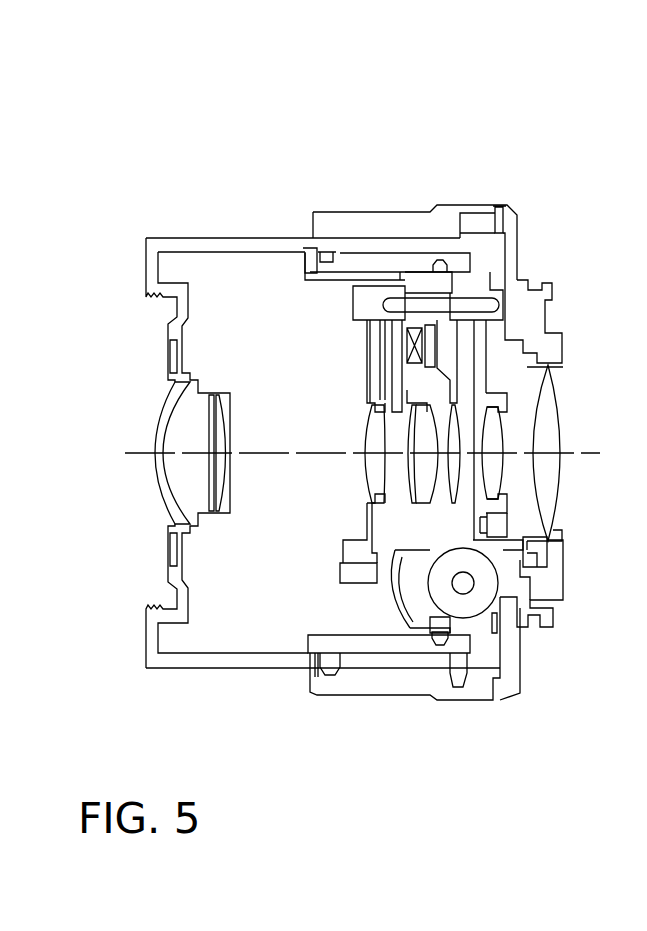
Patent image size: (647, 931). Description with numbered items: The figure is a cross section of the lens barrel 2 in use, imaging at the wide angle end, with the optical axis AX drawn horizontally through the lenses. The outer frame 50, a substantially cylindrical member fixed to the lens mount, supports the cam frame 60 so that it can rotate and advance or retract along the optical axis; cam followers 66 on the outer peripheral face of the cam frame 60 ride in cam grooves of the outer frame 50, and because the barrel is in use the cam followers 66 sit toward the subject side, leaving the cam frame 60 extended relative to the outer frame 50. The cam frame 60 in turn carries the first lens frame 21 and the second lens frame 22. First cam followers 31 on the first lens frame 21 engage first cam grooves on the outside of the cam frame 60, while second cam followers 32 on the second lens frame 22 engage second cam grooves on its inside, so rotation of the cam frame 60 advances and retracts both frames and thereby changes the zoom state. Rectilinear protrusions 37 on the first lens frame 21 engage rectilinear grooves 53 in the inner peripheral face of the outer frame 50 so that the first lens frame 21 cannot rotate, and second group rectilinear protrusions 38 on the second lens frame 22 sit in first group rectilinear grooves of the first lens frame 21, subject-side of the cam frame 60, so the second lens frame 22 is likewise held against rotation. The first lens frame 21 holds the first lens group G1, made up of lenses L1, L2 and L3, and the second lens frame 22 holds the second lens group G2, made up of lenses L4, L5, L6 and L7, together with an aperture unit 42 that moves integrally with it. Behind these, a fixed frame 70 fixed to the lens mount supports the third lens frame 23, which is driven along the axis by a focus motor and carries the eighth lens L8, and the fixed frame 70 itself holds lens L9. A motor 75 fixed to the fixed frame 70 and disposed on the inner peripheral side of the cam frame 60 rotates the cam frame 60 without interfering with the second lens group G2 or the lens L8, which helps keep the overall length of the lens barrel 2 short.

The lens barrel 2 is at (155, 138).
The first lens frame 21 is at (172, 245).
The second lens frame 22 is at (498, 547).
The third lens frame 23 is at (497, 517).
The first cam followers 31 is at (313, 250).
The second cam followers 32 is at (450, 265).
The rectilinear protrusions 37 is at (333, 673).
The second group rectilinear protrusions 38 is at (303, 248).
The aperture unit 42 is at (380, 400).
The outer frame 50 is at (403, 220).
The rectilinear grooves 53 is at (407, 672).
The cam frame 60 is at (378, 258).
The cam followers 66 is at (460, 687).
The fixed frame 70 is at (528, 572).
The motor 75 is at (478, 600).
The optical axis AX is at (145, 452).
The first lens group G1 is at (113, 483).
The second lens group G2 is at (300, 460).
The lens L1 is at (163, 475).
The lens L2 is at (210, 465).
The lens L3 is at (218, 477).
The lens L4 is at (375, 462).
The lens L5 is at (410, 463).
The lens L6 is at (433, 467).
The lens L7 is at (457, 457).
The eighth lens L8 is at (490, 433).
The lens L9 is at (550, 437).